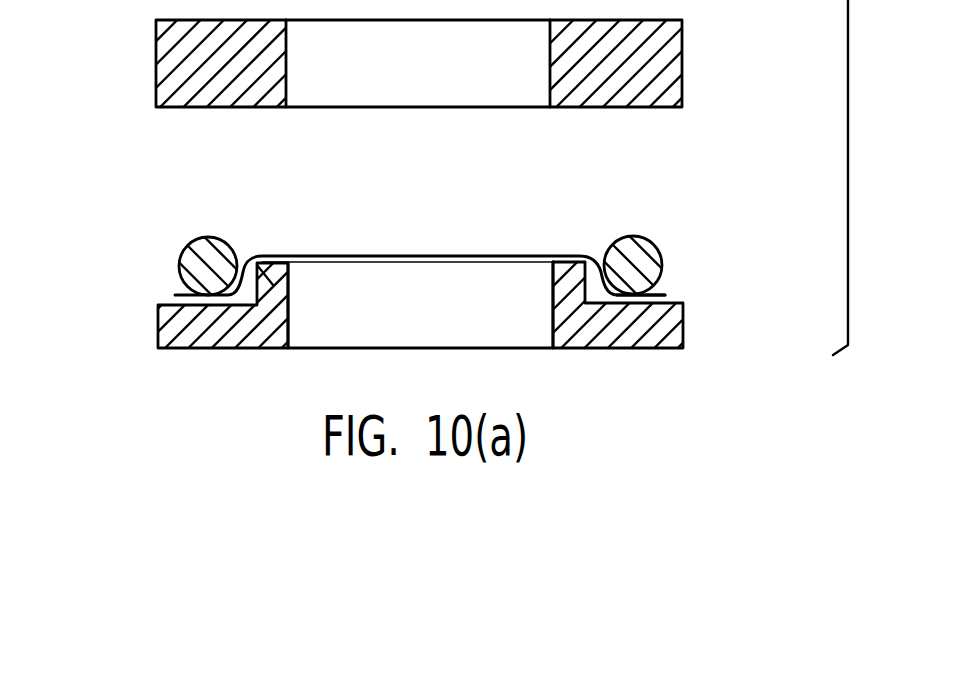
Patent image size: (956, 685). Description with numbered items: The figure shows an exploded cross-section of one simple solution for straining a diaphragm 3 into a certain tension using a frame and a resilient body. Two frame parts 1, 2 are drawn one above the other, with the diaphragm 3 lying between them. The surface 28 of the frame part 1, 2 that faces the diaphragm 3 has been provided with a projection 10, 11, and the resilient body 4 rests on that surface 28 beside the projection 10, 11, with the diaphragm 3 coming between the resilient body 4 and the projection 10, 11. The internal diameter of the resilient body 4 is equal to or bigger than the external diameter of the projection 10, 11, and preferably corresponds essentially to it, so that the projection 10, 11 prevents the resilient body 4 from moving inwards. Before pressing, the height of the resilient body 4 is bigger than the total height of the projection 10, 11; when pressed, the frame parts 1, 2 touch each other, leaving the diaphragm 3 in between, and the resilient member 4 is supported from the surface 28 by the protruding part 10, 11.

The frame part 1 is at (633, 35).
The frame part 2 is at (617, 340).
The diaphragm 3 is at (502, 254).
The resilient body 4 is at (645, 255).
The projection 10 is at (246, 256).
The projection 11 is at (208, 266).
The surface 28 is at (668, 298).